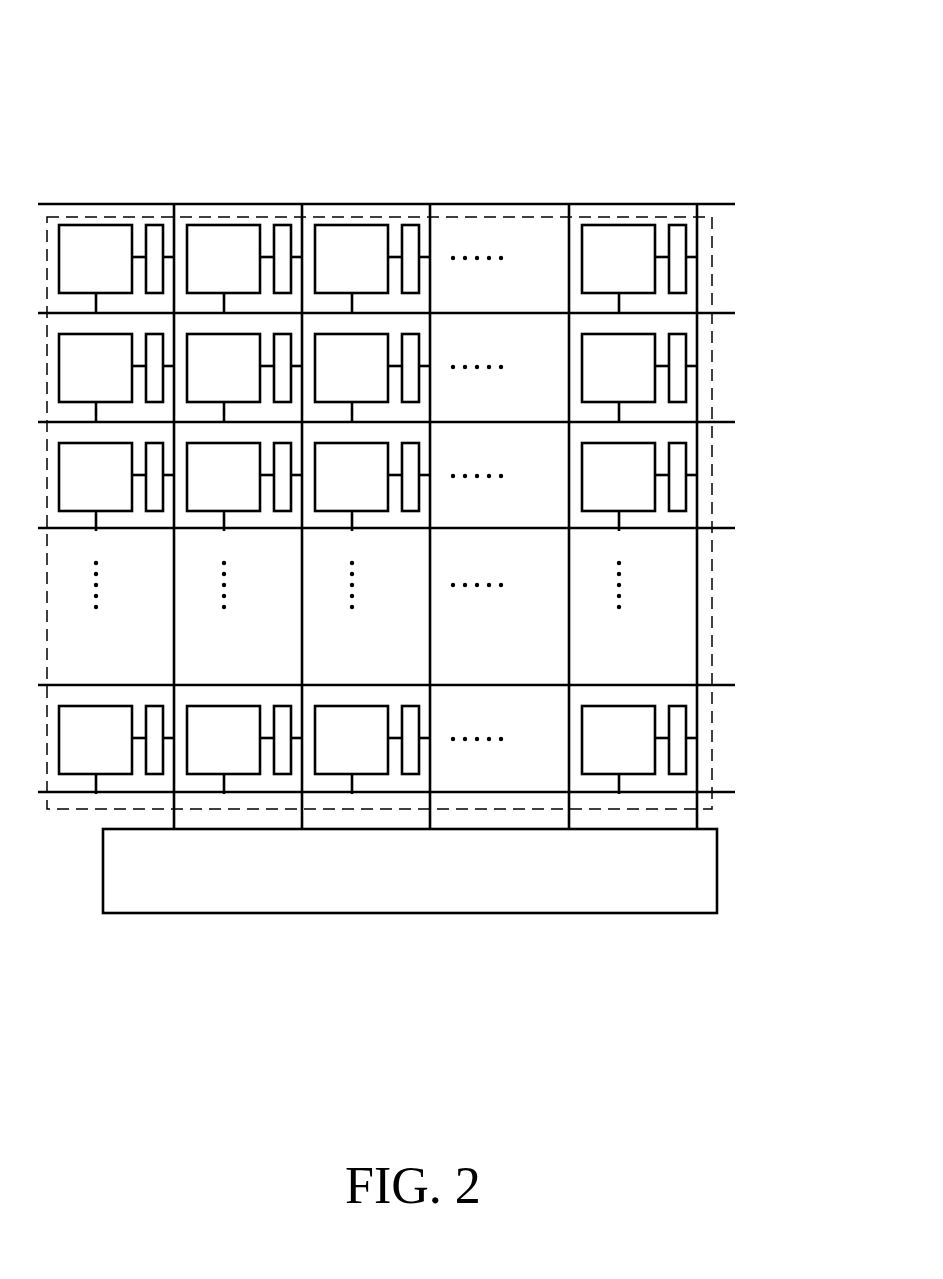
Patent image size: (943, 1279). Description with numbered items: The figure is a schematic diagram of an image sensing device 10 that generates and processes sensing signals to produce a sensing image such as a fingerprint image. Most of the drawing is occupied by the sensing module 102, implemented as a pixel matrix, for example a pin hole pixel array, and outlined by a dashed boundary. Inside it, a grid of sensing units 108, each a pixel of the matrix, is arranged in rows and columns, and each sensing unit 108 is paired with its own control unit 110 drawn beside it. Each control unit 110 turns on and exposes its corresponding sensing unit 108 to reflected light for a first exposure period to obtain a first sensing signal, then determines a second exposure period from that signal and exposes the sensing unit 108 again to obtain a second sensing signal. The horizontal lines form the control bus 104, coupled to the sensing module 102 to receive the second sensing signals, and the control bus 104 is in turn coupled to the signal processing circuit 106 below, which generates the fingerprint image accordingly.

The image sensing device 10 is at (682, 115).
The sensing module 102 is at (712, 583).
The control bus 104 is at (720, 685).
The signal processing circuit 106 is at (718, 870).
The sensing unit 108 is at (364, 509).
The control unit 110 is at (155, 224).